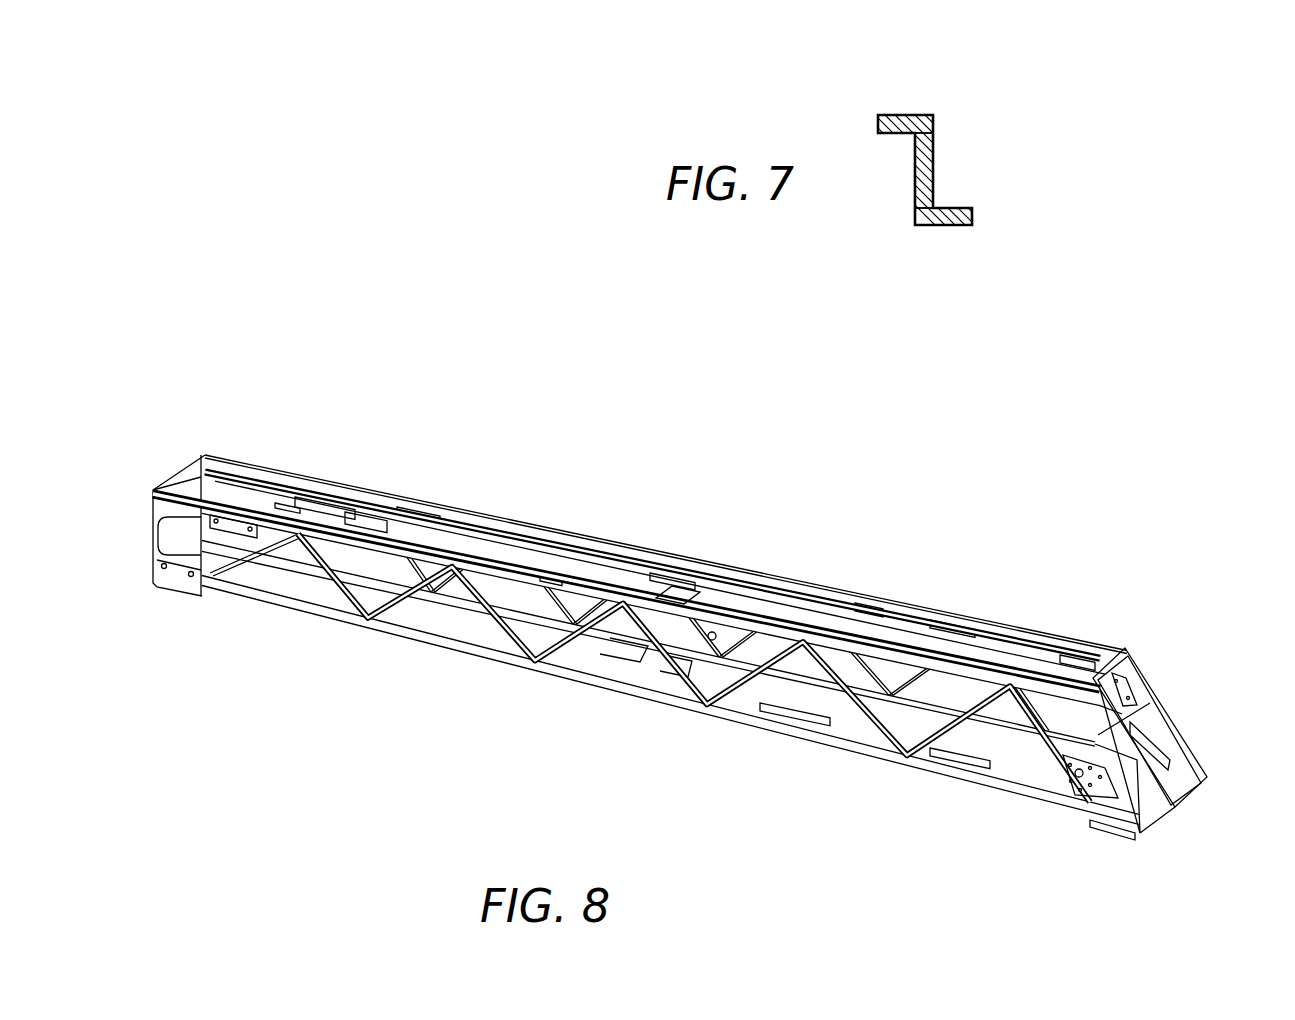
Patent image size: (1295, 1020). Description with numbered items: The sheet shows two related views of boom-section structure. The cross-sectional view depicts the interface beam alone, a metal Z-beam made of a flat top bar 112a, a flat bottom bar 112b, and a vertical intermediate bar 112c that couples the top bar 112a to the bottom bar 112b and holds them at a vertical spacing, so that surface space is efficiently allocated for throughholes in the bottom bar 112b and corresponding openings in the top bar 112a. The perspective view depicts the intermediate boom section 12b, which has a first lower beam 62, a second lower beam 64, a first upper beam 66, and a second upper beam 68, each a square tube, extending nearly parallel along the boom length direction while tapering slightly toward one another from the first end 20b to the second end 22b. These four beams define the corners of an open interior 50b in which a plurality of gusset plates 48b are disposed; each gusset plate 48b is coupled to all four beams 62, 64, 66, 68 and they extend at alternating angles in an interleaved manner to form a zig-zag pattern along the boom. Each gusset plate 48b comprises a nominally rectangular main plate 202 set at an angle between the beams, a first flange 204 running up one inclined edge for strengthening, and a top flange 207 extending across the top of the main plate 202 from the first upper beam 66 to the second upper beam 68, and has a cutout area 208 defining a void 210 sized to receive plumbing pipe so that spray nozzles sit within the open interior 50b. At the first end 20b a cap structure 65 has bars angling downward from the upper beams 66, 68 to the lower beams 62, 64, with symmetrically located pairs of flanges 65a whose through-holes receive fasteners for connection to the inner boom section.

In FIG. 7, the intermediate boom section 12b is at (1012, 82).
In FIG. 8, the intermediate boom section 12b is at (761, 451).
In FIG. 7, the top bar 112a is at (892, 115).
In FIG. 7, the bottom bar 112b is at (940, 228).
In FIG. 7, the intermediate bar 112c is at (935, 172).
In FIG. 8, the second end 22b is at (236, 407).
In FIG. 8, the first end 20b is at (1154, 590).
In FIG. 8, the cap structure 65 is at (1188, 690).
In FIG. 8, the flanges 65a is at (1126, 690).
In FIG. 8, the gusset plates 48b is at (512, 545).
In FIG. 8, the open interior 50b is at (798, 707).
In FIG. 8, the first lower beam 62 is at (448, 602).
In FIG. 8, the second lower beam 64 is at (397, 635).
In FIG. 8, the first upper beam 66 is at (612, 556).
In FIG. 8, the second upper beam 68 is at (558, 578).
In FIG. 8, the main plate 202 is at (684, 584).
In FIG. 8, the first flange 204 is at (645, 645).
In FIG. 8, the top flange 207 is at (670, 580).
In FIG. 8, the cutout area 208 is at (683, 665).
In FIG. 8, the void 210 is at (713, 638).